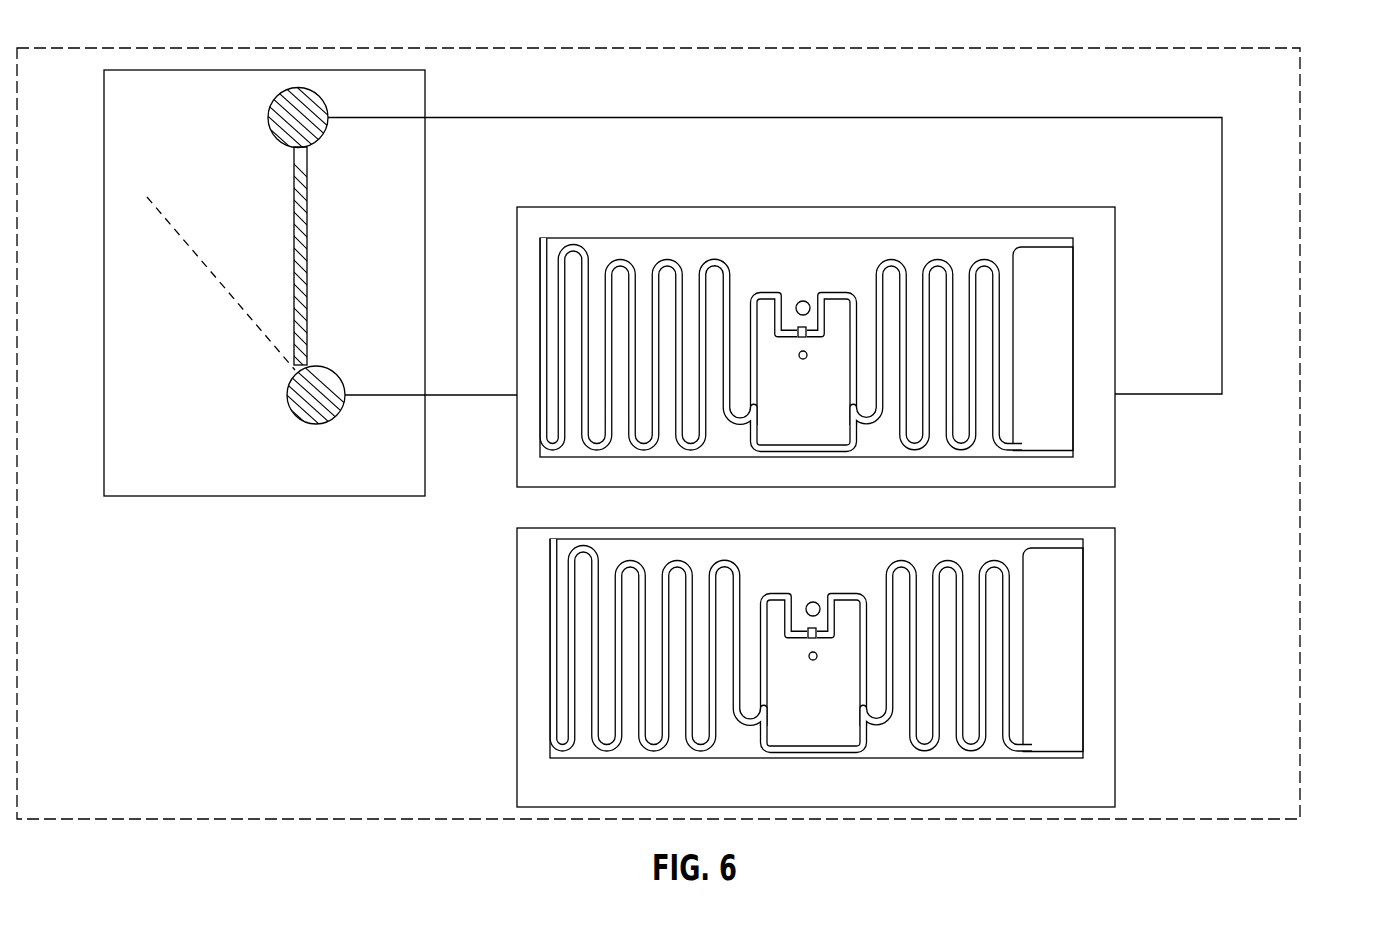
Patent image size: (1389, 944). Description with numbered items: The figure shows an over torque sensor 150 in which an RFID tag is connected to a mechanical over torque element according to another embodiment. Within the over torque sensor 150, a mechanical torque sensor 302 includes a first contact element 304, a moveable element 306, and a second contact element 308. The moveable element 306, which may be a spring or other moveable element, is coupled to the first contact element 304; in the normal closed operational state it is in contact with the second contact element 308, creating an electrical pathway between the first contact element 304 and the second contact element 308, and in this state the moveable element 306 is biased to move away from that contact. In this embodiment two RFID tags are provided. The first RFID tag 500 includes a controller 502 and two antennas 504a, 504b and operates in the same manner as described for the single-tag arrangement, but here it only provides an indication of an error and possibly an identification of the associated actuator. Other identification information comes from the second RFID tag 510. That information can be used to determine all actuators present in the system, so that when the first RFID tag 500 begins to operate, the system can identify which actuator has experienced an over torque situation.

The over torque sensor 150 is at (1300, 355).
The mechanical torque sensor 302 is at (265, 497).
The first contact element 304 is at (285, 395).
The moveable element 306 is at (308, 260).
The second contact element 308 is at (268, 118).
The first RFID tag 500 is at (778, 318).
The controller 502 is at (821, 297).
The antenna 504a is at (635, 303).
The antenna 504b is at (950, 298).
The second RFID tag 510 is at (516, 689).